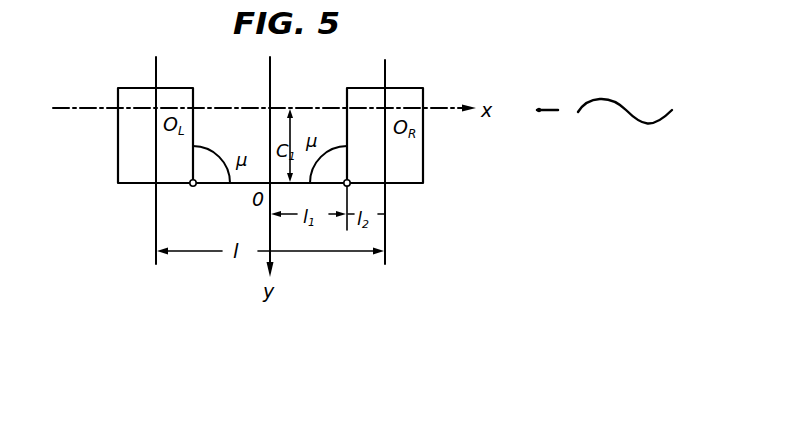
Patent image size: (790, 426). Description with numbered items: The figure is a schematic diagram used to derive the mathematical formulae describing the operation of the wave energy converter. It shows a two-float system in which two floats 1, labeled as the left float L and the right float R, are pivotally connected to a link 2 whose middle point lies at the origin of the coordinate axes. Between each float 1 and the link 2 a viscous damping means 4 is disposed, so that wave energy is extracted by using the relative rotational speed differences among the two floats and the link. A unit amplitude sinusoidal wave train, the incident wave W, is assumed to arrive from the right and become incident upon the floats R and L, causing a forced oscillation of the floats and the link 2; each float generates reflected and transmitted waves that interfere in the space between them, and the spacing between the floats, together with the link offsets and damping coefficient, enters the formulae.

The float 1 is at (118, 163).
The link 2 is at (207, 188).
The damping means 4 is at (223, 154).
The left float L is at (176, 88).
The right float R is at (413, 88).
The incident wave W is at (618, 107).